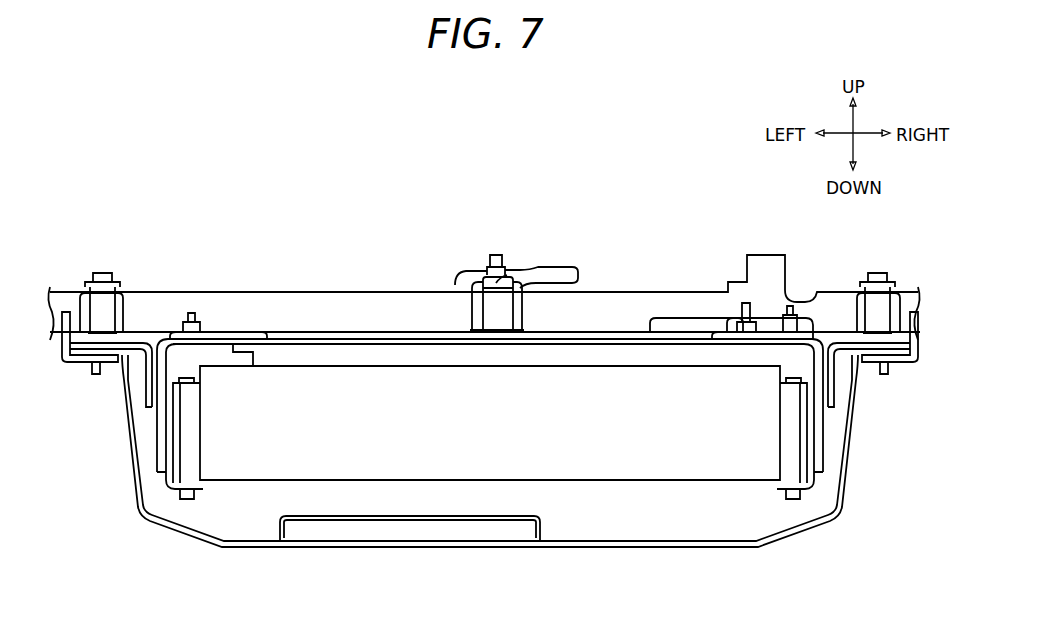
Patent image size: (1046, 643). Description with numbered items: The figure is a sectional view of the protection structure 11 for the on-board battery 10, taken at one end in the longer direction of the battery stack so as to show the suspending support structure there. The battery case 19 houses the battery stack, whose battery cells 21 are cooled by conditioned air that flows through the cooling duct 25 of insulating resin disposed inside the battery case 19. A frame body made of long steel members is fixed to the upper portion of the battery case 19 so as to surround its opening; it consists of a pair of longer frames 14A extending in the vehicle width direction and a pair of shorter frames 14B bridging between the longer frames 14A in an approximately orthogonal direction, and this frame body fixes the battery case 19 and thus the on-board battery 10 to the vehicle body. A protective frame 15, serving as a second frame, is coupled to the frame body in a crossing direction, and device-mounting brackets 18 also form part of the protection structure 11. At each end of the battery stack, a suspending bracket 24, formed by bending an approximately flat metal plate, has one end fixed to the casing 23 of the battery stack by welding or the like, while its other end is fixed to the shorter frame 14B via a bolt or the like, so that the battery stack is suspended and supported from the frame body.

The on-board battery 10 is at (484, 370).
The protection structure 11 is at (490, 187).
The longer frame 14A is at (316, 302).
The shorter frame 14B is at (64, 308).
The protective frame 15 is at (473, 318).
The device-mounting bracket 18 is at (608, 338).
The battery case 19 is at (807, 532).
The battery cell 21 is at (598, 465).
The casing 23 is at (160, 480).
The suspending bracket 24 is at (135, 338).
The cooling duct 25 is at (407, 528).